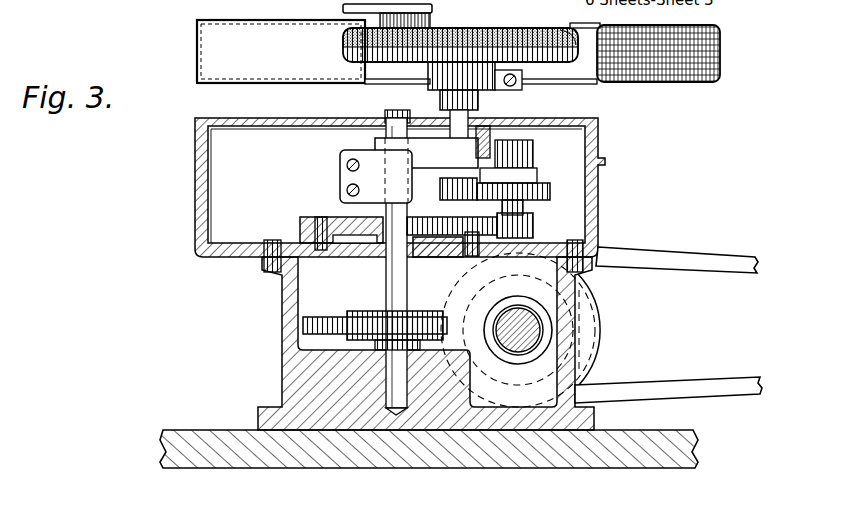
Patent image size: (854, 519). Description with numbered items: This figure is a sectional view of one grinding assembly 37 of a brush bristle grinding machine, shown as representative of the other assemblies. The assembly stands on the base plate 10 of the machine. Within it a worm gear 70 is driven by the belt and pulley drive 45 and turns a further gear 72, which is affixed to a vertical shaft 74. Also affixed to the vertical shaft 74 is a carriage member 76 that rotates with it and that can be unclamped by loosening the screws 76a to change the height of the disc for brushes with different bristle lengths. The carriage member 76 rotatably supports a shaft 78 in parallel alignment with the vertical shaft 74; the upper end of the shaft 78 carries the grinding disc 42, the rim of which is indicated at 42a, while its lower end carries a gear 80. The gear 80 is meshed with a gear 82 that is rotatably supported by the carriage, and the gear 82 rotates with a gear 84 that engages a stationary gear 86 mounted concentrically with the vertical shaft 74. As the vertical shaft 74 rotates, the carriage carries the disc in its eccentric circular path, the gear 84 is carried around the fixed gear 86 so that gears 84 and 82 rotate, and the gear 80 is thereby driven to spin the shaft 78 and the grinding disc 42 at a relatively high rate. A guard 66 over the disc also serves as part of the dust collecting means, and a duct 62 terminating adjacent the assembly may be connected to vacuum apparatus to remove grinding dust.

The base plate 10 is at (560, 470).
The grinding assembly 37 is at (606, 177).
The grinding disc 42 is at (345, 38).
The brush disc rim 42a is at (548, 33).
The belt and pulley drive 45 is at (697, 247).
The duct 62 is at (698, 82).
The guard 66 is at (257, 82).
The worm gear 70 is at (535, 336).
The gear 72 is at (303, 326).
The vertical shaft 74 is at (393, 280).
The carriage member 76 is at (484, 138).
The screws 76a is at (346, 188).
The shaft 78 is at (450, 118).
The gear 80 is at (441, 178).
The gear 82 is at (546, 183).
The gear 84 is at (536, 226).
The stationary gear 86 is at (452, 240).